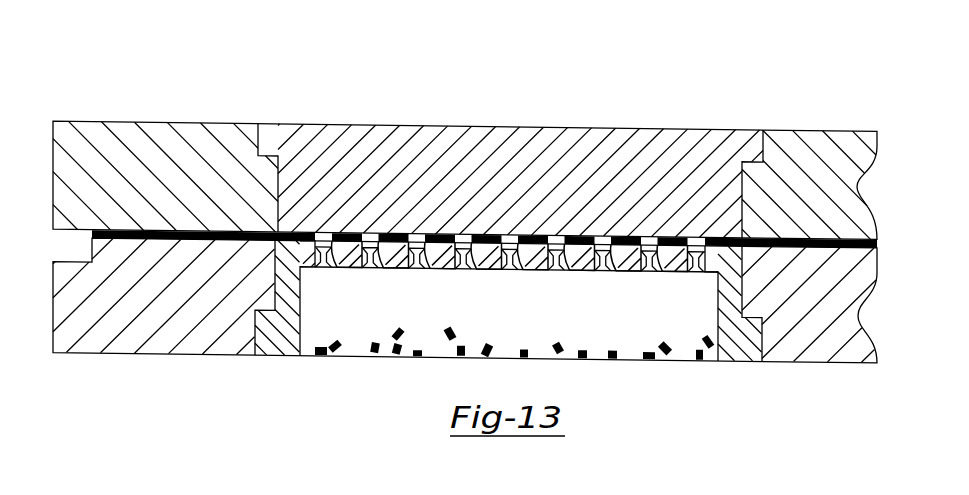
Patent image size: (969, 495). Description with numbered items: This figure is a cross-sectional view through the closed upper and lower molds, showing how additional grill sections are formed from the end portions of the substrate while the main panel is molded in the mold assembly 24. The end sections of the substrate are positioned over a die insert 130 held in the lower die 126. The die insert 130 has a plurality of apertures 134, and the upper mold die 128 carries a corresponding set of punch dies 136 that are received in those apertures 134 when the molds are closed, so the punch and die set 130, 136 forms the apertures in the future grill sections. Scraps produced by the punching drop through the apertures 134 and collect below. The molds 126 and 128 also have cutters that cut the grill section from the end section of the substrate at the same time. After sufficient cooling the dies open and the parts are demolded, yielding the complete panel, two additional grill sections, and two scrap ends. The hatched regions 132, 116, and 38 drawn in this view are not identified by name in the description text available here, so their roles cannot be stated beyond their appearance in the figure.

The mold assembly 24 is at (119, 119).
The upper mold die 128 is at (201, 135).
The upper mold insert 132 is at (392, 155).
The film layer 116 is at (813, 232).
The die 126 is at (157, 347).
The die insert 130 is at (272, 349).
The aperture 134 is at (458, 268).
The punch die 136 is at (323, 265).
The particles 38 is at (327, 356).